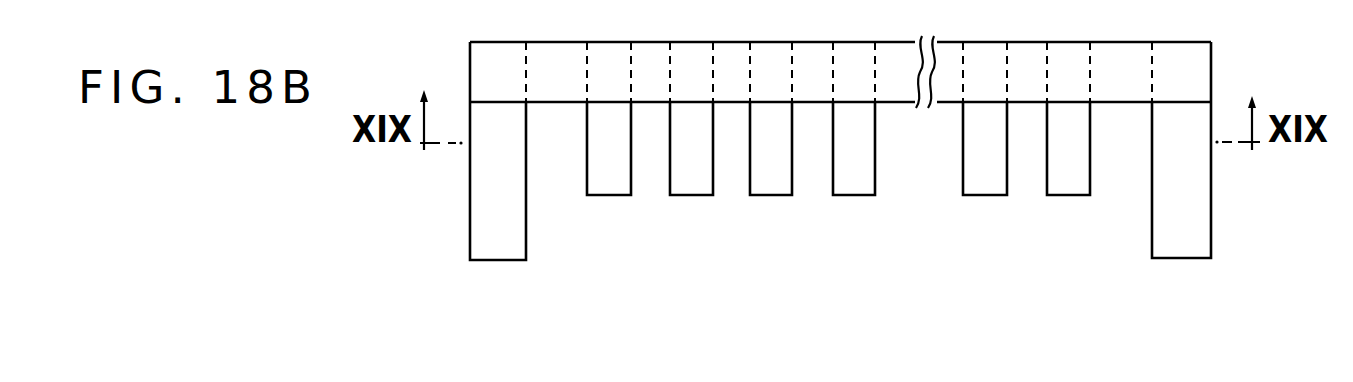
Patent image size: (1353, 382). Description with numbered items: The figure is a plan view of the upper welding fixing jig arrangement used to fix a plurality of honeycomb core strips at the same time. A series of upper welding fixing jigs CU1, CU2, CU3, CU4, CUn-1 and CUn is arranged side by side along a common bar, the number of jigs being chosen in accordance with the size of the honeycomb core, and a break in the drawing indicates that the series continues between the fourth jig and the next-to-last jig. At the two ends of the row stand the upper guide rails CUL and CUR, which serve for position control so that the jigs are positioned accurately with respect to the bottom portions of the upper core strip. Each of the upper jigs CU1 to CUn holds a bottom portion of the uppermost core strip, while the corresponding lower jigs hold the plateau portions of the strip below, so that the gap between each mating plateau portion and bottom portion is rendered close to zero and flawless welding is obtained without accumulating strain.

The upper guide rail CUL is at (496, 260).
The upper welding fixing jig CU1 is at (606, 195).
The upper welding fixing jig CU2 is at (695, 195).
The upper welding fixing jig CU3 is at (773, 195).
The upper welding fixing jig CU4 is at (853, 195).
The upper welding fixing jig CUn-1 is at (983, 195).
The upper welding fixing jig CUn is at (1066, 195).
The upper guide rail CUR is at (1180, 258).